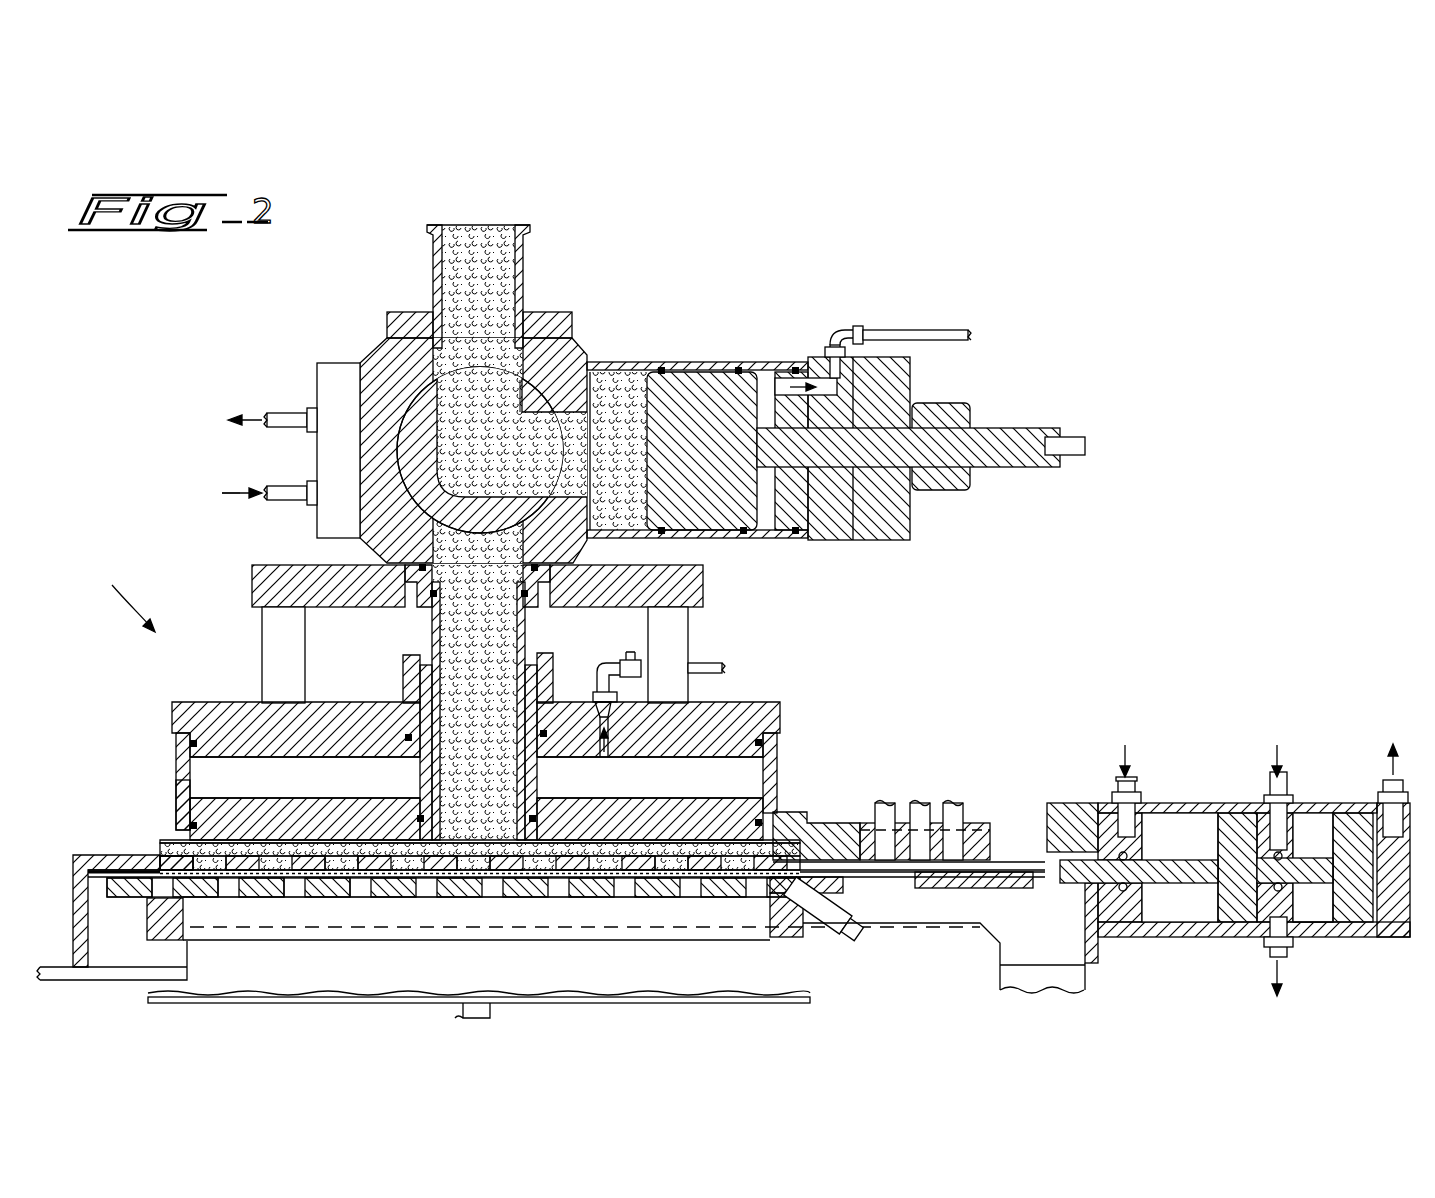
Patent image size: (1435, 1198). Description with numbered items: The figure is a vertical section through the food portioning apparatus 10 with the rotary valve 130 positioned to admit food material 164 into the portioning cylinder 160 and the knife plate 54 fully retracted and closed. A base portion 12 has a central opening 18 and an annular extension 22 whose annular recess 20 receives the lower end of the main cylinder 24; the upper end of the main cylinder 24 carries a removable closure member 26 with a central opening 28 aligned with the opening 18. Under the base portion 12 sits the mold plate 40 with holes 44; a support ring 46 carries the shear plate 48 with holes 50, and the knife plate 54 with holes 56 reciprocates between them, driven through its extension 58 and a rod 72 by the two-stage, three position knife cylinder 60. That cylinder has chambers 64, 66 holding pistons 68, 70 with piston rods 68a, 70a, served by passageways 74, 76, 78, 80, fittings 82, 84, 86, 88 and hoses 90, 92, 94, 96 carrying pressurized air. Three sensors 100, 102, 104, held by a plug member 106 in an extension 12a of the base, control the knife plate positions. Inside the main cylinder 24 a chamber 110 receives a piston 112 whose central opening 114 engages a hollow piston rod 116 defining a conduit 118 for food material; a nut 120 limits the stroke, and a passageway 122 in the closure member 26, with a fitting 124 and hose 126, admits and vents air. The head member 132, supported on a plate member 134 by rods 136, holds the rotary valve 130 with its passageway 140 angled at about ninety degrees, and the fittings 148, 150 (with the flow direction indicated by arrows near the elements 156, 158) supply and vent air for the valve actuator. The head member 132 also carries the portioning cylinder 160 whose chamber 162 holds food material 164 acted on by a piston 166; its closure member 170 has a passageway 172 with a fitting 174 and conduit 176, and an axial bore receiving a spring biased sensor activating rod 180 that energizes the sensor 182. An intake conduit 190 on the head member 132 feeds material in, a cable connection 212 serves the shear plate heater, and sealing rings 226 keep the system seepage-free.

The apparatus 10 is at (123, 594).
The base portion 12 is at (73, 885).
The extension of the base portion 12a is at (820, 798).
The central opening 18 is at (185, 849).
The annular recess 20 is at (190, 846).
The annular extension 22 is at (178, 840).
The main cylinder 24 is at (775, 770).
The closure member 26 is at (780, 710).
The central opening 28 is at (415, 720).
The mold plate 40 is at (158, 862).
The holes 44 is at (315, 870).
The support ring 46 is at (155, 940).
The shear plate 48 is at (162, 893).
The holes 50 is at (225, 897).
The knife plate 54 is at (88, 872).
The holes 56 is at (270, 897).
The extension 58 is at (920, 885).
The knife cylinder 60 is at (1098, 940).
The chamber 64 is at (1188, 937).
The chamber 66 is at (1300, 922).
The piston 68 is at (1228, 825).
The piston rod 68a is at (1160, 830).
The piston 70 is at (1350, 830).
The piston rod 70a is at (1310, 840).
The rod 72 is at (1058, 884).
The passageway 74 is at (1100, 815).
The passageway 76 is at (1268, 920).
The passageway 78 is at (1272, 806).
The passageway 80 is at (1404, 840).
The fitting 82 is at (1118, 790).
The fitting 84 is at (1266, 950).
The fitting 86 is at (1287, 792).
The fitting 88 is at (1400, 790).
The conduit or hose 90 is at (1132, 740).
The conduit or hose 92 is at (1298, 984).
The conduit or hose 94 is at (1259, 736).
The conduit or hose 96 is at (1379, 745).
The sensor 100 is at (883, 803).
The sensor 102 is at (920, 803).
The sensor 104 is at (953, 803).
The plug member 106 is at (975, 823).
The chamber 110 is at (176, 745).
The piston 112 is at (188, 790).
The central opening 114 is at (424, 792).
The hollow piston rod 116 is at (526, 632).
The conduit 118 is at (432, 625).
The nut 120 is at (553, 672).
The passageway 122 is at (612, 735).
The fitting 124 is at (630, 660).
The conduit or hose 126 is at (722, 668).
The rotary valve 130 is at (562, 362).
The head member 132 is at (378, 358).
The plate member 134 is at (252, 590).
The rods 136 is at (262, 640).
The passageway 140 is at (515, 345).
The fitting 148 is at (303, 432).
The fitting 150 is at (303, 505).
The side plate 156 is at (280, 410).
The inlet flow 158 is at (258, 500).
The portioning cylinder 160 is at (700, 368).
The chamber 162 is at (780, 545).
The food material 164 is at (630, 378).
The piston 166 is at (764, 372).
The closure member 170 is at (855, 545).
The passageway 172 is at (835, 384).
The fitting 174 is at (835, 332).
The conduit 176 is at (922, 330).
The sensor activating rod 180 is at (995, 428).
The sensor 182 is at (1085, 442).
The intake conduit 190 is at (526, 256).
The cable connection 212 is at (840, 930).
The sealing means 226 is at (430, 596).